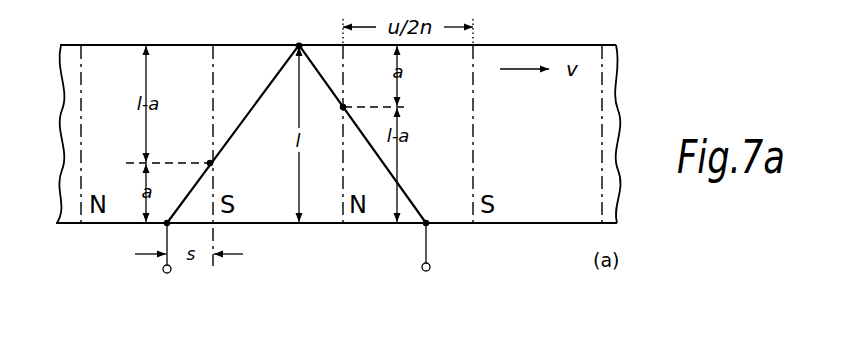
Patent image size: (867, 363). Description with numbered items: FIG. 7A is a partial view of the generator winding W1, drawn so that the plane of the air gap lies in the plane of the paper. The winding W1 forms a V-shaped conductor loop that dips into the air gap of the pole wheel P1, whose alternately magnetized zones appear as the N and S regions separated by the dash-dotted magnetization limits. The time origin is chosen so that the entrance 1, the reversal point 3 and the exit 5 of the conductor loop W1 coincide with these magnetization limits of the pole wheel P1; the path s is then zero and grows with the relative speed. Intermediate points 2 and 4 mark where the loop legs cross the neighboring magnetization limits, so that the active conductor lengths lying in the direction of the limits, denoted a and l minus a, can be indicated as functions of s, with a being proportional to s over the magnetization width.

The entrance 1 is at (163, 213).
The point 2 on sensor path 2 is at (205, 154).
The reversal point 3 is at (294, 35).
The point 4 on sensor path 4 is at (334, 104).
The exit 5 is at (429, 215).
The generator winding W1 is at (428, 232).
The pole wheel P1 is at (555, 214).